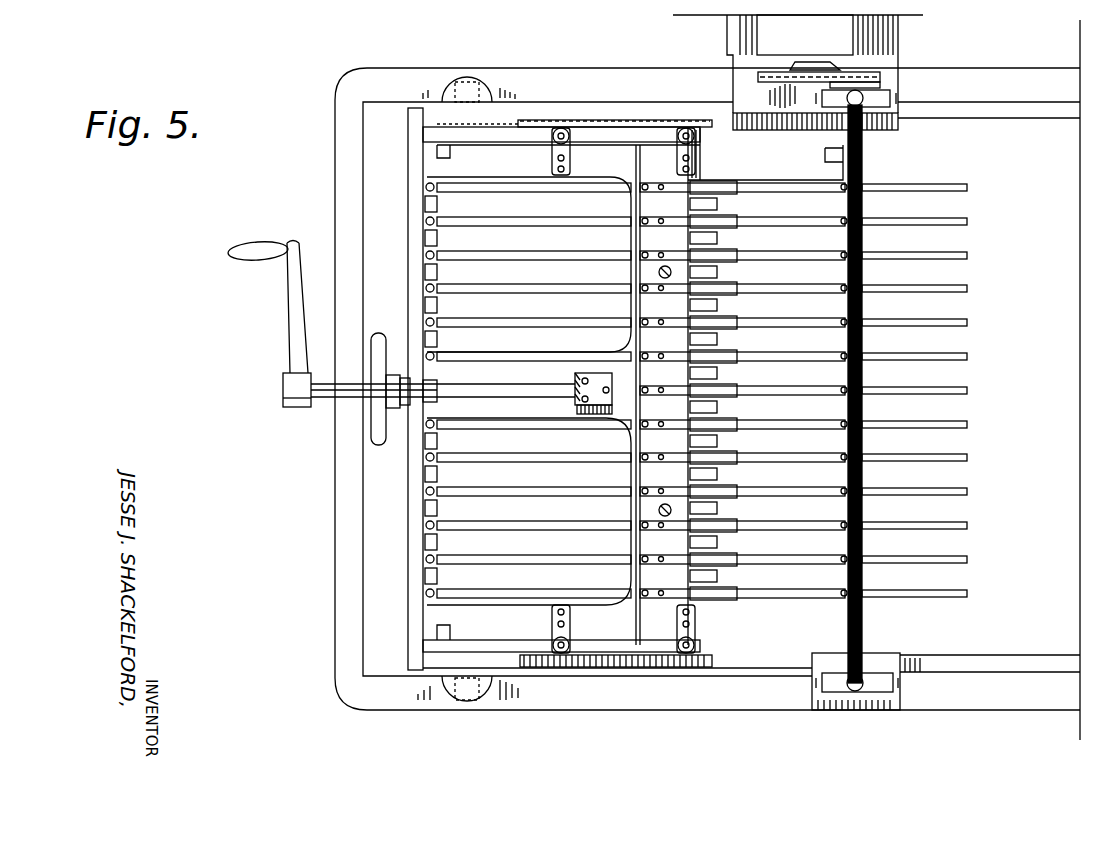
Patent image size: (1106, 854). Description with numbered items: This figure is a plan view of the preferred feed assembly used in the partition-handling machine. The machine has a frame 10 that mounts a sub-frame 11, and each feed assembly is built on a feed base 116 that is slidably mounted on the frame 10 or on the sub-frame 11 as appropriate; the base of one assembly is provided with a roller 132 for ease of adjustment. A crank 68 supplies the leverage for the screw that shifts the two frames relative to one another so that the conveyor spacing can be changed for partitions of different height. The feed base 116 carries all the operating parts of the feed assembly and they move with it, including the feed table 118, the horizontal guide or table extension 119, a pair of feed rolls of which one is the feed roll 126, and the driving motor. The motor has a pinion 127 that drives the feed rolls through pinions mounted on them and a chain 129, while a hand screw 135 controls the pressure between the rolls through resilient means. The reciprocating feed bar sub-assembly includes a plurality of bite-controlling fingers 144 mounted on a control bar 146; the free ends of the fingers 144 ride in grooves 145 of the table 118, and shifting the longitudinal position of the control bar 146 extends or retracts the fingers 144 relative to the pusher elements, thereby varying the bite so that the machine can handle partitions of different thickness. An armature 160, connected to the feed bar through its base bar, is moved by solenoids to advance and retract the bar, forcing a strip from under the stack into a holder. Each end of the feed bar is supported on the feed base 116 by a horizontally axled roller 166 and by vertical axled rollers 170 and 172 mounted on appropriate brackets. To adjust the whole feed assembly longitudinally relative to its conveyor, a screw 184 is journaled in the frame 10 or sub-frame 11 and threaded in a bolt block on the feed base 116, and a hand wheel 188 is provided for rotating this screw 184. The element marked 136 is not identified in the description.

The frame 10 is at (335, 598).
The sub-frame 11 is at (423, 208).
The crank 68 is at (288, 326).
The feed base 116 is at (431, 114).
The feed table 118 is at (742, 390).
The horizontal guide or table extension 119 is at (962, 292).
The feed roll 126 is at (862, 161).
The pinion 127 is at (798, 64).
The chain 129 is at (868, 72).
The roller 132 is at (467, 704).
The hand screw 135 is at (893, 98).
The cross bar 136 is at (828, 92).
The bite-controlling fingers 144 is at (720, 238).
The grooves 145 is at (786, 390).
The control bar 146 is at (650, 378).
The armature 160 is at (625, 403).
The horizontally axled roller 166 is at (711, 122).
The vertical axled roller 170 is at (597, 151).
The vertical axled roller 172 is at (682, 148).
The screw 184 is at (510, 420).
The hand wheel 188 is at (367, 401).